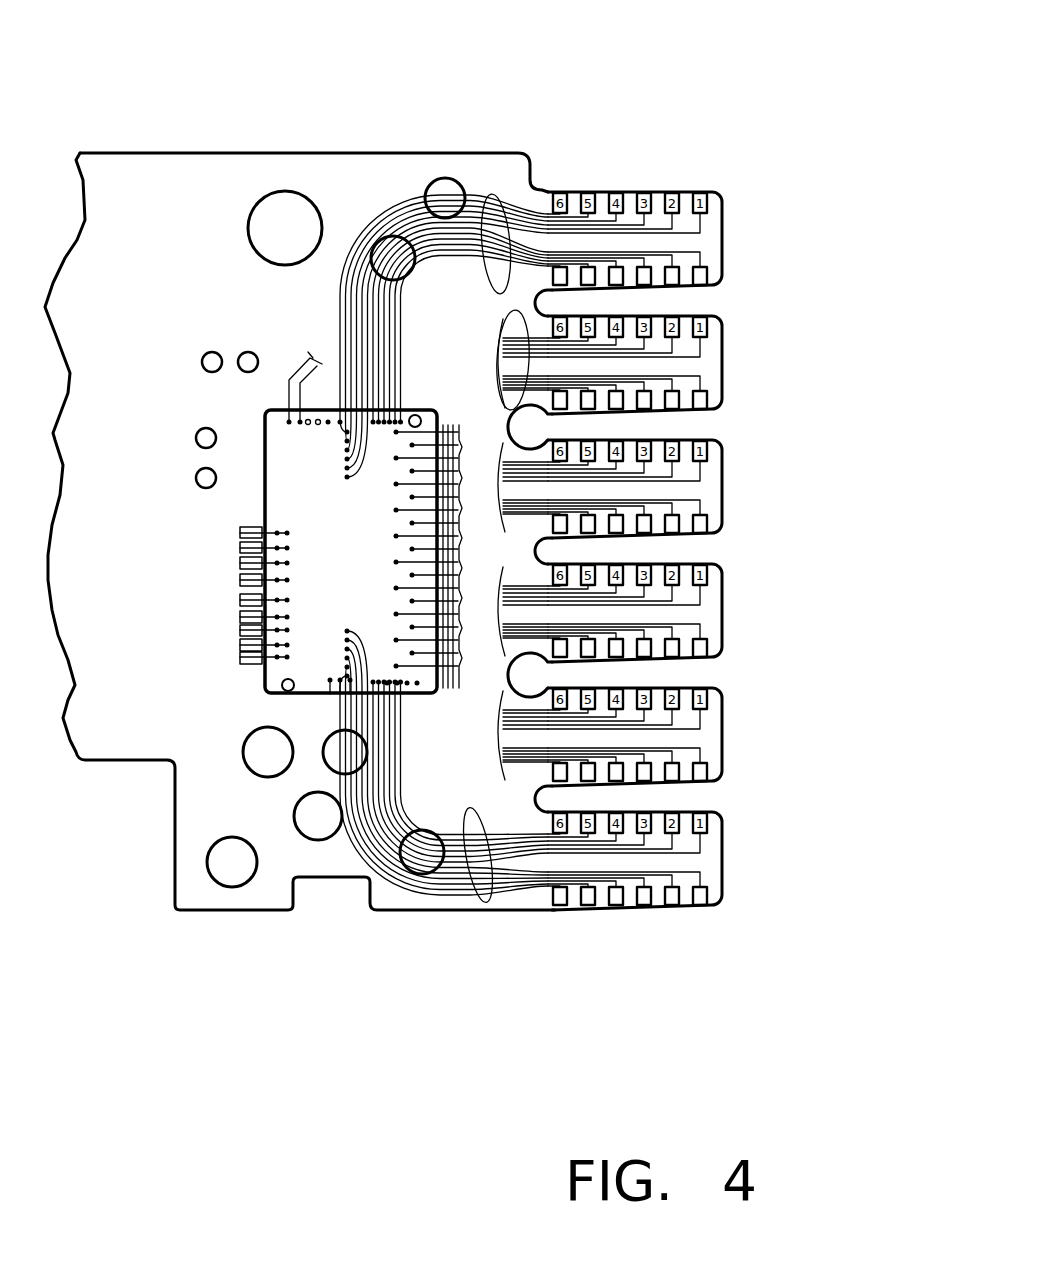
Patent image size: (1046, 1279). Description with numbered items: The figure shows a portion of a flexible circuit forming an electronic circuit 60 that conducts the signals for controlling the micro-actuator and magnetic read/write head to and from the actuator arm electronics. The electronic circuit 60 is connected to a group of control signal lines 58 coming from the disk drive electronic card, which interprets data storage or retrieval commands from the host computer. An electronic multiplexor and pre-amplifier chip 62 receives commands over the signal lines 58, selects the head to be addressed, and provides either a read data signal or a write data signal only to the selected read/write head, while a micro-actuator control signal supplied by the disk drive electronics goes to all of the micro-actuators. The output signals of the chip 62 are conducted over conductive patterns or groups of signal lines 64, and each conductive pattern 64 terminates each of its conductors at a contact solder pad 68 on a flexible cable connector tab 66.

The control signal lines 58 is at (218, 527).
The electronic circuit 60 is at (356, 104).
The electronic multiplexor and pre-amplifier chip 62 is at (292, 447).
The conductive patterns 64 is at (484, 195).
The flexible cable connector tab 66 is at (723, 240).
The contact solder pad 68 is at (614, 192).